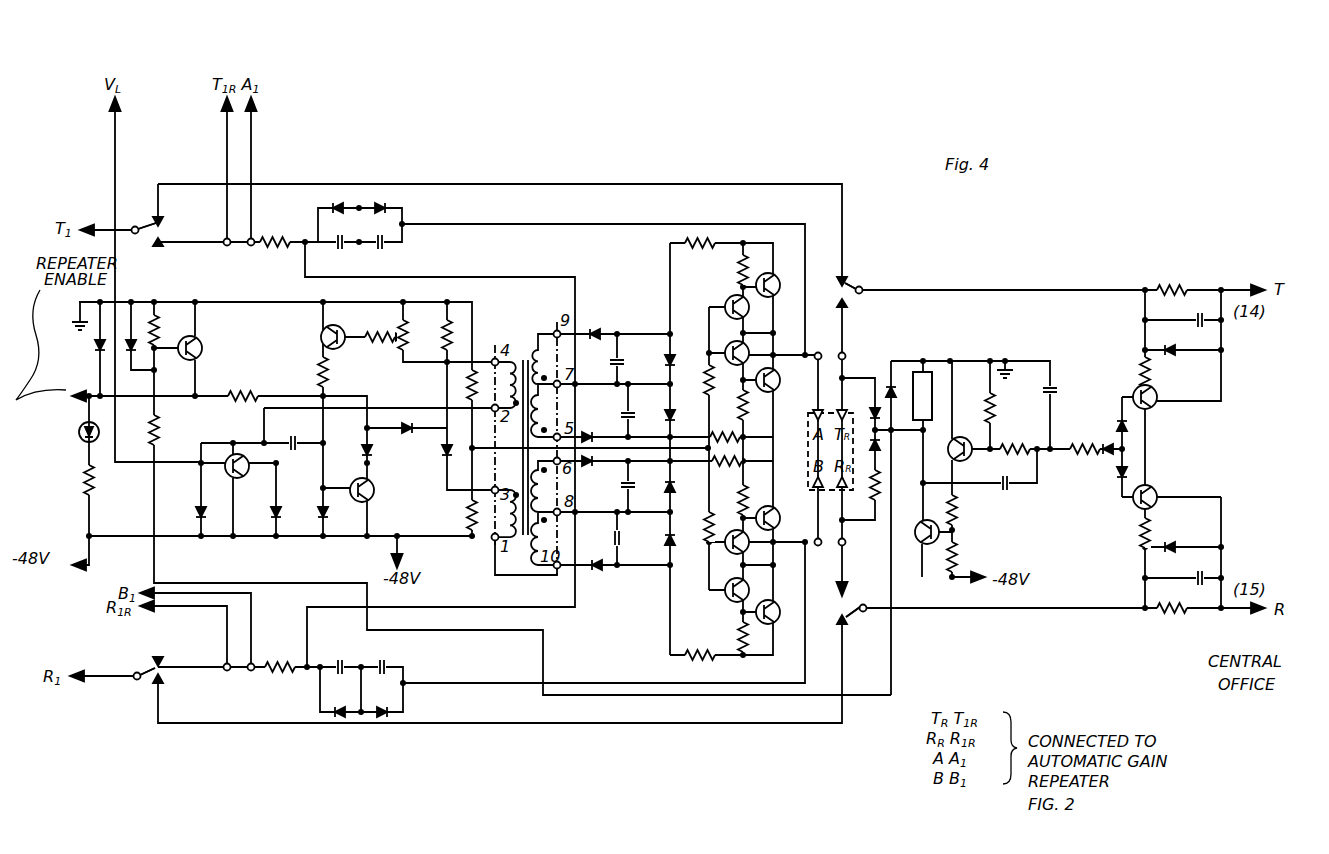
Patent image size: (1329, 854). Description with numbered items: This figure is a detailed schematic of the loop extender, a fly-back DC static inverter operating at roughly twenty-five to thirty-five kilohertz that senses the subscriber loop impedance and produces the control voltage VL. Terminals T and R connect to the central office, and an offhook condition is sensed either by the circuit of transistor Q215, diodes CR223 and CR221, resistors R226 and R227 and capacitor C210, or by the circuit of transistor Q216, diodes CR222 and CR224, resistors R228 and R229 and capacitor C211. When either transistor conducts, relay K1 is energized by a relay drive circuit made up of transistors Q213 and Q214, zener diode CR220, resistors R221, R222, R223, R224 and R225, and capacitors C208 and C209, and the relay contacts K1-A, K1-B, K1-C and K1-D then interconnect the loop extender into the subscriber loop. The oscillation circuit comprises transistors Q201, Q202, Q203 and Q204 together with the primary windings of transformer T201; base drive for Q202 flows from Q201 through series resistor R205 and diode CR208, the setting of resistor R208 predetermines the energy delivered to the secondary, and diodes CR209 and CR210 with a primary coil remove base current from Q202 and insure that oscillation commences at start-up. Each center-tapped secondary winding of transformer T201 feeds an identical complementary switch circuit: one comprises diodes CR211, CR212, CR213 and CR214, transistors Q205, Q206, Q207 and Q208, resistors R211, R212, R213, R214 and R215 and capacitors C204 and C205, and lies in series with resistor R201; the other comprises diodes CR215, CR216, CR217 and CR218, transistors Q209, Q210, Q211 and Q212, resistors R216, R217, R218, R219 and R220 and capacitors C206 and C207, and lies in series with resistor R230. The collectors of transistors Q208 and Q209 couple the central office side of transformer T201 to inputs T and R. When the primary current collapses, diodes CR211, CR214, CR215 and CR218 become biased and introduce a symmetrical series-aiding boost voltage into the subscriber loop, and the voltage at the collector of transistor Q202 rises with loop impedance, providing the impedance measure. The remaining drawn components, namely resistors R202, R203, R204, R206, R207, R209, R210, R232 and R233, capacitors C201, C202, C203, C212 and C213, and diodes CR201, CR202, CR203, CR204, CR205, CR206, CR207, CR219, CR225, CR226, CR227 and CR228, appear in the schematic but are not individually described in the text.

The relay contact K1-A is at (155, 245).
The relay contact K1-B is at (175, 677).
The relay contact K1-C is at (877, 279).
The relay contact K1-D is at (866, 623).
The relay K1 is at (930, 390).
The transformer T201 is at (526, 445).
The resistor R201 is at (278, 233).
The resistor R202 is at (69, 458).
The resistor R203 is at (160, 330).
The resistor R204 is at (177, 430).
The series resistor R205 is at (237, 387).
The resistor R206 is at (346, 372).
The resistor R207 is at (372, 347).
The resistor R208 is at (423, 332).
The resistor R209 is at (452, 348).
The resistor R210 is at (448, 386).
The resistor R211 is at (700, 236).
The resistor R212 is at (716, 270).
The resistor R213 is at (695, 362).
The resistor R214 is at (748, 405).
The resistor R215 is at (735, 430).
The resistor R216 is at (740, 458).
The resistor R217 is at (749, 500).
The resistor R218 is at (706, 539).
The resistor R219 is at (715, 637).
The resistor R220 is at (702, 664).
The resistor R221 is at (1012, 408).
The resistor R222 is at (1020, 438).
The resistor R223 is at (1076, 460).
The resistor R224 is at (977, 511).
The resistor R225 is at (977, 557).
The resistor R226 is at (1170, 281).
The resistor R227 is at (1123, 372).
The resistor R228 is at (1118, 533).
The resistor R229 is at (1172, 617).
The resistor R230 is at (271, 676).
The resistor R232 is at (880, 510).
The resistor R233 is at (445, 515).
The capacitor C201 is at (337, 252).
The capacitor C202 is at (390, 252).
The capacitor C203 is at (288, 436).
The capacitor C204 is at (630, 414).
The capacitor C205 is at (620, 365).
The capacitor C206 is at (610, 492).
The capacitor C207 is at (648, 537).
The capacitor C208 is at (1070, 392).
The capacitor C209 is at (994, 491).
The capacitor C210 is at (1177, 313).
The capacitor C211 is at (1182, 573).
The capacitor C212 is at (337, 658).
The capacitor C213 is at (388, 658).
The diode CR201 is at (335, 199).
The diode CR202 is at (388, 199).
The diode CR203 is at (72, 345).
The diode CR204 is at (128, 352).
The diode CR205 is at (199, 512).
The diode CR206 is at (276, 515).
The diode CR207 is at (318, 512).
The diode CR208 is at (395, 451).
The diode CR209 is at (419, 420).
The diode CR210 is at (444, 452).
The diode CR211 is at (607, 324).
The diode CR212 is at (648, 370).
The diode CR213 is at (695, 424).
The diode CR214 is at (589, 425).
The diode CR215 is at (599, 470).
The diode CR216 is at (670, 490).
The diode CR217 is at (645, 545).
The diode CR218 is at (609, 578).
The diode CR219 is at (880, 410).
The zener diode CR220 is at (1084, 438).
The diode CR221 is at (1153, 431).
The diode CR222 is at (1153, 466).
The diode CR223 is at (1187, 359).
The diode CR224 is at (1182, 539).
The diode CR225 is at (315, 717).
The diode CR226 is at (387, 717).
The diode CR227 is at (880, 442).
The diode CR228 is at (896, 390).
The transistor Q201 is at (214, 348).
The transistor Q202 is at (225, 467).
The transistor Q203 is at (350, 328).
The transistor Q204 is at (386, 490).
The transistor Q205 is at (777, 280).
The transistor Q206 is at (748, 312).
The transistor Q207 is at (748, 348).
The transistor Q208 is at (778, 375).
The transistor Q209 is at (775, 530).
The transistor Q210 is at (713, 553).
The transistor Q211 is at (720, 598).
The transistor Q212 is at (772, 625).
The transistor Q213 is at (982, 457).
The transistor Q214 is at (918, 535).
The transistor Q215 is at (1166, 405).
The transistor Q216 is at (1167, 502).